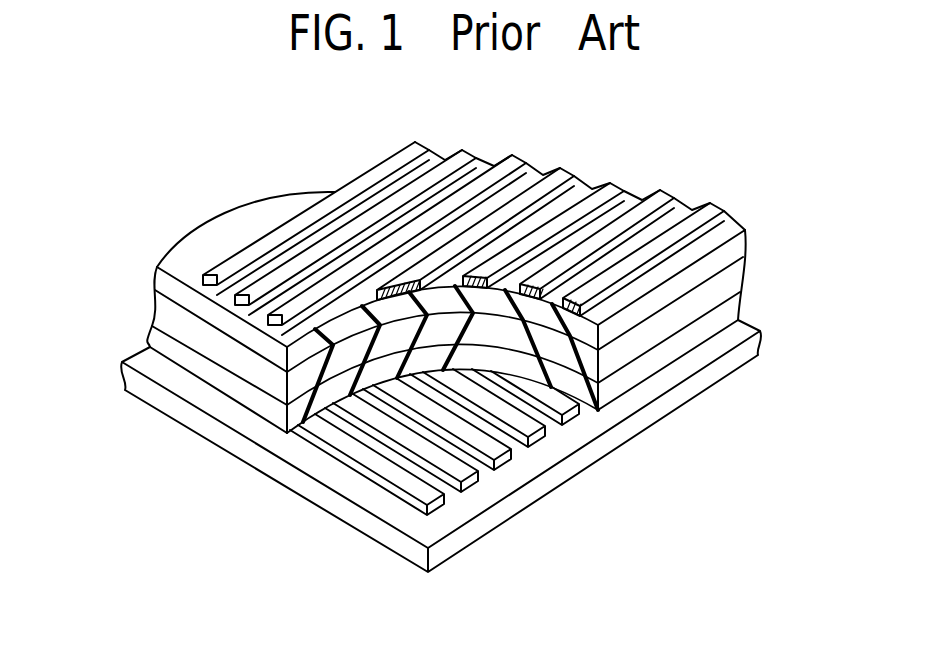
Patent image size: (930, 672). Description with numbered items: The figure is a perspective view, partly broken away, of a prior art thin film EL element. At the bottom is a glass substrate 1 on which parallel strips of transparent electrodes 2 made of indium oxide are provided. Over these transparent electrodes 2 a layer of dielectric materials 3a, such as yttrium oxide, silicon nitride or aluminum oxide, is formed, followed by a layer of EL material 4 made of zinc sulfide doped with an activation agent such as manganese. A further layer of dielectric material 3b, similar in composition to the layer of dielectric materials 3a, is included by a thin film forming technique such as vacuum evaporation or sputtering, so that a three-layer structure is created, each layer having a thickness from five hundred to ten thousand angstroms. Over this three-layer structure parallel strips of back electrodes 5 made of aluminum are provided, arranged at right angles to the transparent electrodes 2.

The glass substrate 1 is at (629, 427).
The transparent electrodes 2 is at (357, 452).
The layer of dielectric materials 3a is at (238, 390).
The layer of dielectric material 3b is at (207, 257).
The layer of EL material 4 is at (165, 315).
The back electrodes 5 is at (567, 178).